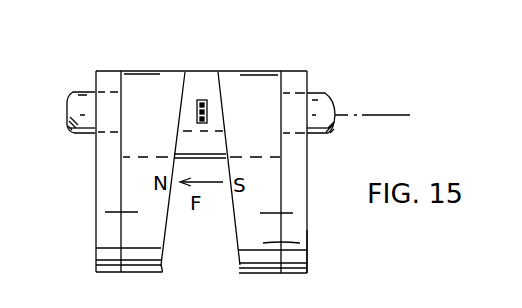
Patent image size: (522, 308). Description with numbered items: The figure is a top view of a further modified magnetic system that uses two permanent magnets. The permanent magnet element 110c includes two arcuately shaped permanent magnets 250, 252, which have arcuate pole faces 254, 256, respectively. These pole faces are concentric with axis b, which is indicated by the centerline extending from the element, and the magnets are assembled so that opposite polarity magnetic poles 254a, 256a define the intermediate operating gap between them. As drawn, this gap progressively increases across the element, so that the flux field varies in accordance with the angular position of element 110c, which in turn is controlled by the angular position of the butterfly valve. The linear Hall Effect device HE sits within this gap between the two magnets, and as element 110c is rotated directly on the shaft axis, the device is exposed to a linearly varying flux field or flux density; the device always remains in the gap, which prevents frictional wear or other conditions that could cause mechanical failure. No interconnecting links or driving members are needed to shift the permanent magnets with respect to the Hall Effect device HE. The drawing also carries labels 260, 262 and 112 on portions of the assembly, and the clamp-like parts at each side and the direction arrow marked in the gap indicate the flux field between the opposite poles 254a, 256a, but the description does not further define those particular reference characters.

The arcuately shaped permanent magnet 250 is at (164, 78).
The left side panel 260 is at (110, 78).
The arcuately shaped permanent magnet 252 is at (262, 72).
The inner panel 262 is at (293, 205).
The arcuate pole face 254 is at (132, 238).
The magnetic pole 254a is at (166, 248).
The arcuate pole face 256 is at (305, 250).
The magnetic pole 256a is at (232, 243).
The clamp 112 is at (325, 95).
The axis b is at (392, 115).
The linear Hall Effect device HE is at (211, 112).
The permanent magnet element 110c is at (313, 242).